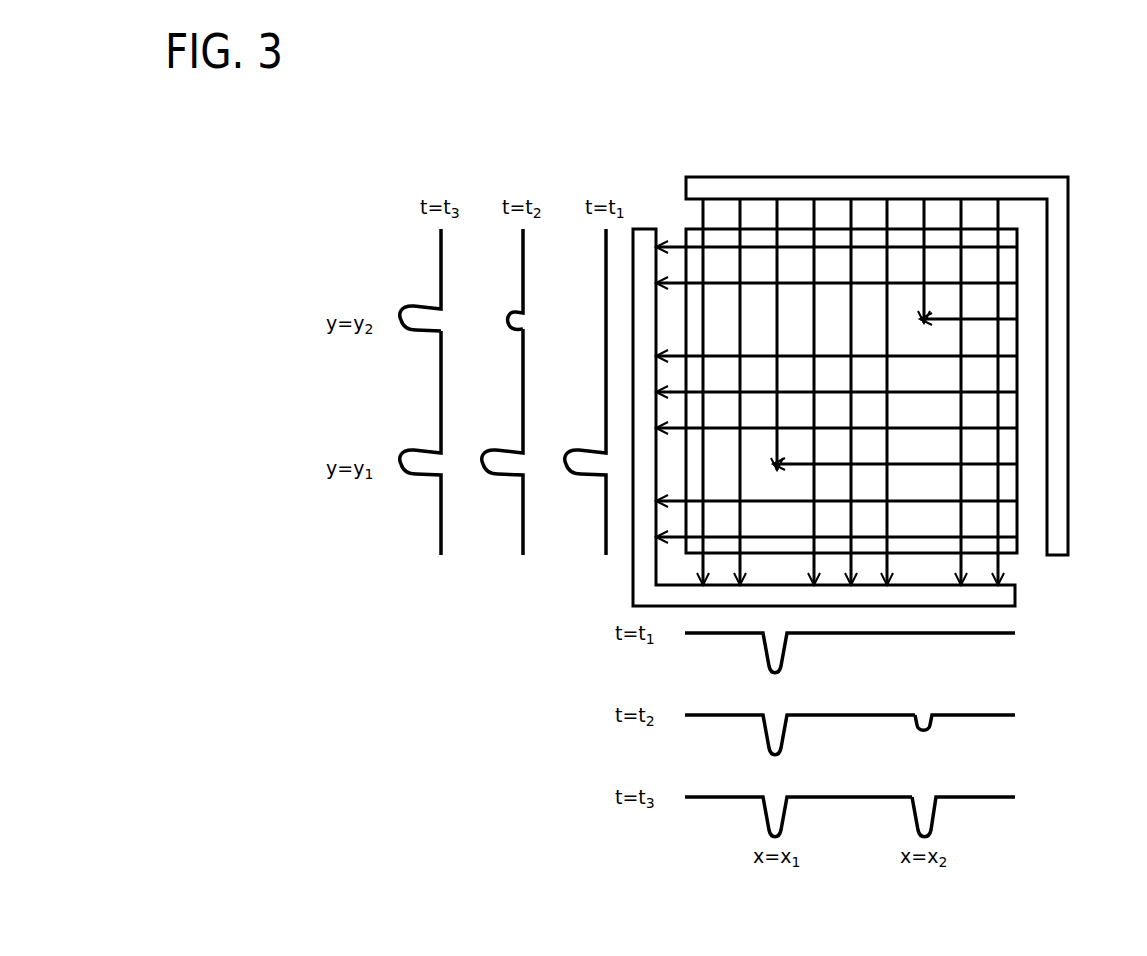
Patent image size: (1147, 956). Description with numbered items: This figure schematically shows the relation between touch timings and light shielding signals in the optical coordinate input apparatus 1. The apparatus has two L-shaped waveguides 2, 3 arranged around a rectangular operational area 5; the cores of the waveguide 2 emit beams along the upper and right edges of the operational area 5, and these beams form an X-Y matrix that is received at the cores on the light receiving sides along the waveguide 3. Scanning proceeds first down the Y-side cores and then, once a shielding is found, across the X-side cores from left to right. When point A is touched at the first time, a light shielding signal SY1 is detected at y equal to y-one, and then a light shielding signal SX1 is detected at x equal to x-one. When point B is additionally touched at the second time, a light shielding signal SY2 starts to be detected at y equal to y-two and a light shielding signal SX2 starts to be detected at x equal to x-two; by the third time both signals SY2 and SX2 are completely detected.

The optical coordinate input apparatus 1 is at (1042, 153).
The waveguide 2 is at (1058, 218).
The waveguide 3 is at (640, 590).
The operational area 5 is at (982, 218).
The light shielding signal SX1 is at (787, 659).
The light shielding signal SX2 is at (931, 725).
The light shielding signal SY1 is at (404, 475).
The light shielding signal SY2 is at (404, 330).